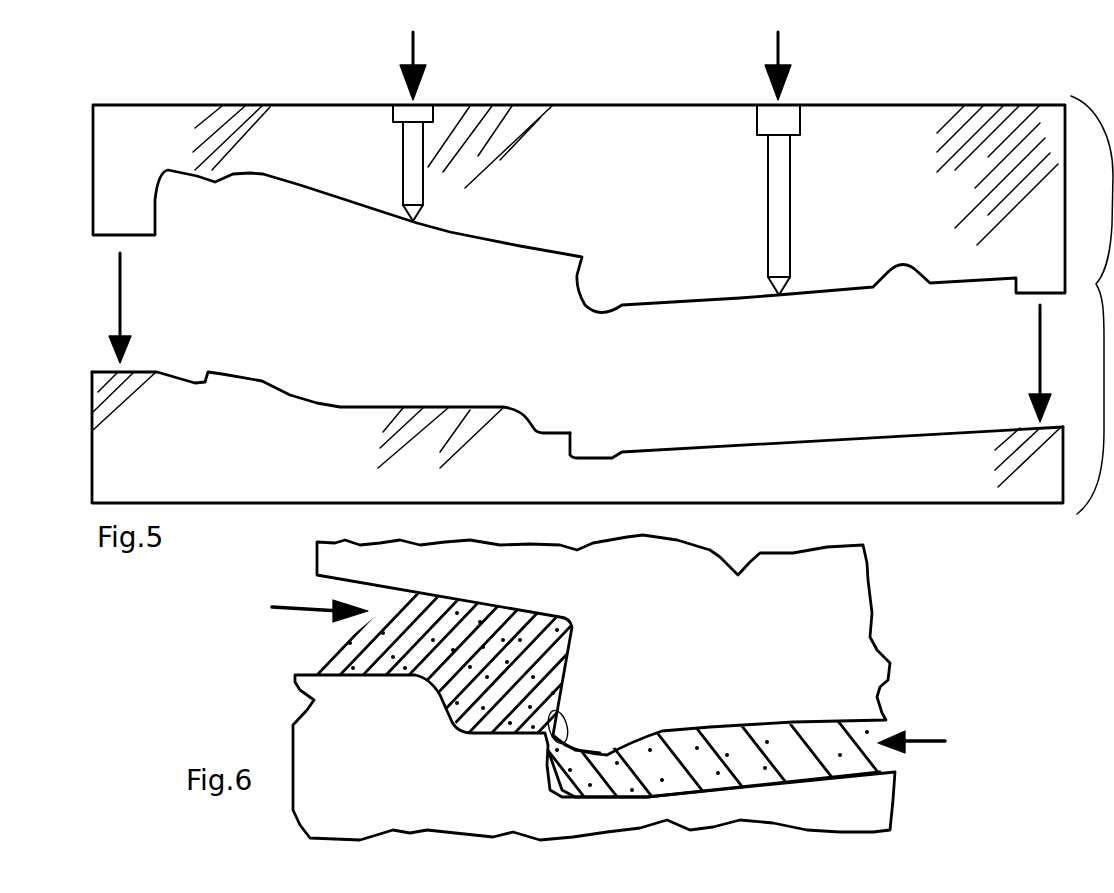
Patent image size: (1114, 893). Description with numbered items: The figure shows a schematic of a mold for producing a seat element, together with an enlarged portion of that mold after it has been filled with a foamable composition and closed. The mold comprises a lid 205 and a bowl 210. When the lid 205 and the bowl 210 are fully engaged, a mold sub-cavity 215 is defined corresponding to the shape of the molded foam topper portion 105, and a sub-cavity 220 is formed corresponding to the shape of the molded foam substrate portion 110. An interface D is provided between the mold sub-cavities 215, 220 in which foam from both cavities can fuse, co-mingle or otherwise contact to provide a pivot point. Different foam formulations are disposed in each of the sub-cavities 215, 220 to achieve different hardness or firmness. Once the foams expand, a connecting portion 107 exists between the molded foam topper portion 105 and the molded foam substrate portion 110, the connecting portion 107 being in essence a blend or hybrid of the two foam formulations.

In FIG. 5, the lid 205 is at (937, 120).
In FIG. 5, the bowl 210 is at (998, 487).
In FIG. 5, the mold sub-cavity 215 is at (792, 437).
In FIG. 5, the sub-cavity 220 is at (352, 397).
In FIG. 6, the molded foam substrate portion 110 is at (560, 613).
In FIG. 6, the molded foam topper portion 105 is at (810, 750).
In FIG. 6, the connecting portion 107 is at (548, 742).
In FIG. 6, the interface D is at (568, 718).